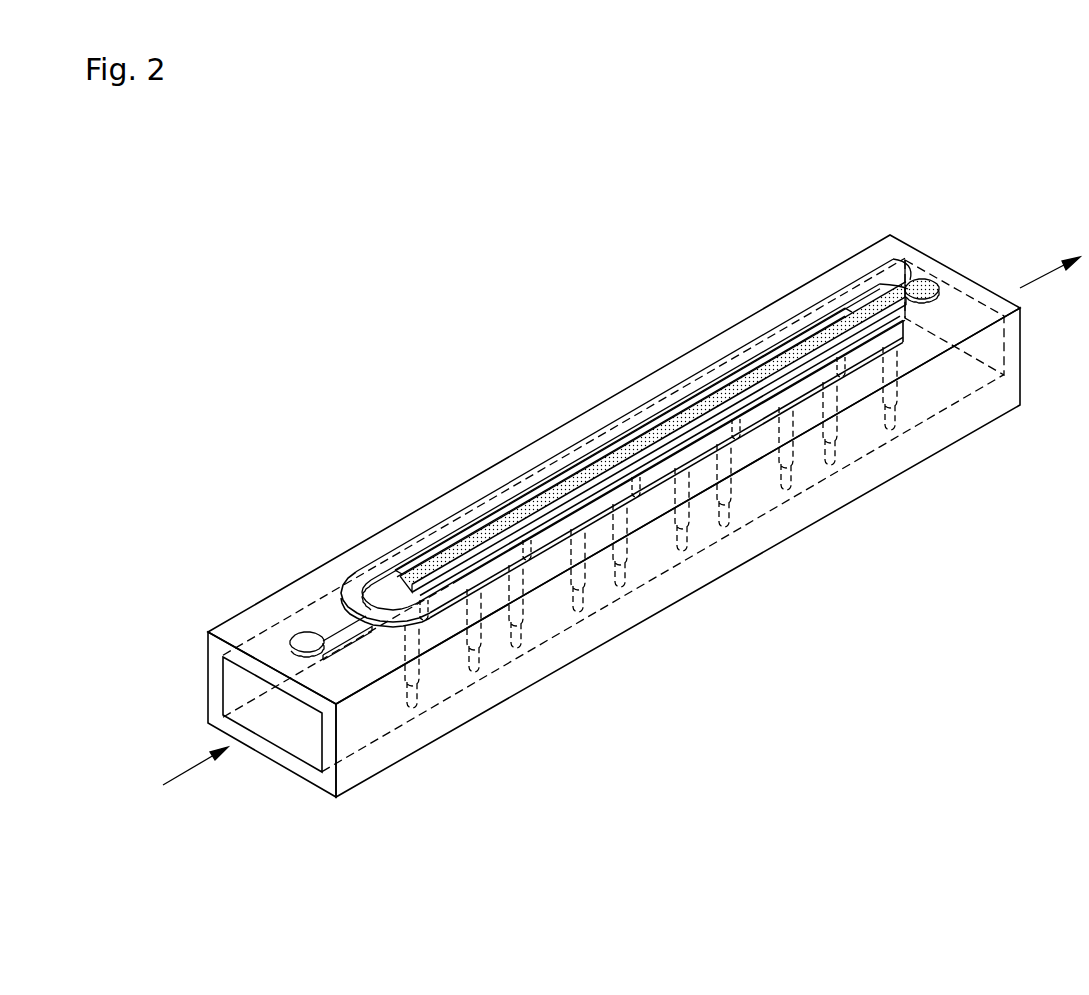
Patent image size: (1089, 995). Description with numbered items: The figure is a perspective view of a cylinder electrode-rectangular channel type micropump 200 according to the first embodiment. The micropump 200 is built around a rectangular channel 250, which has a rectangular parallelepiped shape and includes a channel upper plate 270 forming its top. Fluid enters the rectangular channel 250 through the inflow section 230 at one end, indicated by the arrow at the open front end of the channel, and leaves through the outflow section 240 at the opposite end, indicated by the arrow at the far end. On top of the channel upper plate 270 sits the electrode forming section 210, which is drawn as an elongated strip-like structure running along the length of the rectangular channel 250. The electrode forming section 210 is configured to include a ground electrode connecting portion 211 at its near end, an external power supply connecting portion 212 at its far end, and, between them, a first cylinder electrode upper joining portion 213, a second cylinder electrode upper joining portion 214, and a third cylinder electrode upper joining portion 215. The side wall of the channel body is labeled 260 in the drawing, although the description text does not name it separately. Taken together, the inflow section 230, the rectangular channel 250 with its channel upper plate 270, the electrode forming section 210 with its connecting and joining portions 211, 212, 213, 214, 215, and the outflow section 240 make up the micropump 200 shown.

The cylinder electrode-rectangular channel type micropump 200 is at (858, 190).
The electrode forming section 210 is at (765, 210).
The ground electrode connecting portion 211 is at (305, 632).
The external power supply connecting portion 212 is at (905, 262).
The first cylinder electrode upper joining portion 213 is at (578, 485).
The second cylinder electrode upper joining portion 214 is at (495, 492).
The third cylinder electrode upper joining portion 215 is at (667, 463).
The inflow section 230 is at (290, 730).
The outflow section 240 is at (928, 255).
The rectangular channel 250 is at (357, 675).
The side wall 260 is at (677, 587).
The channel upper plate 270 is at (925, 350).